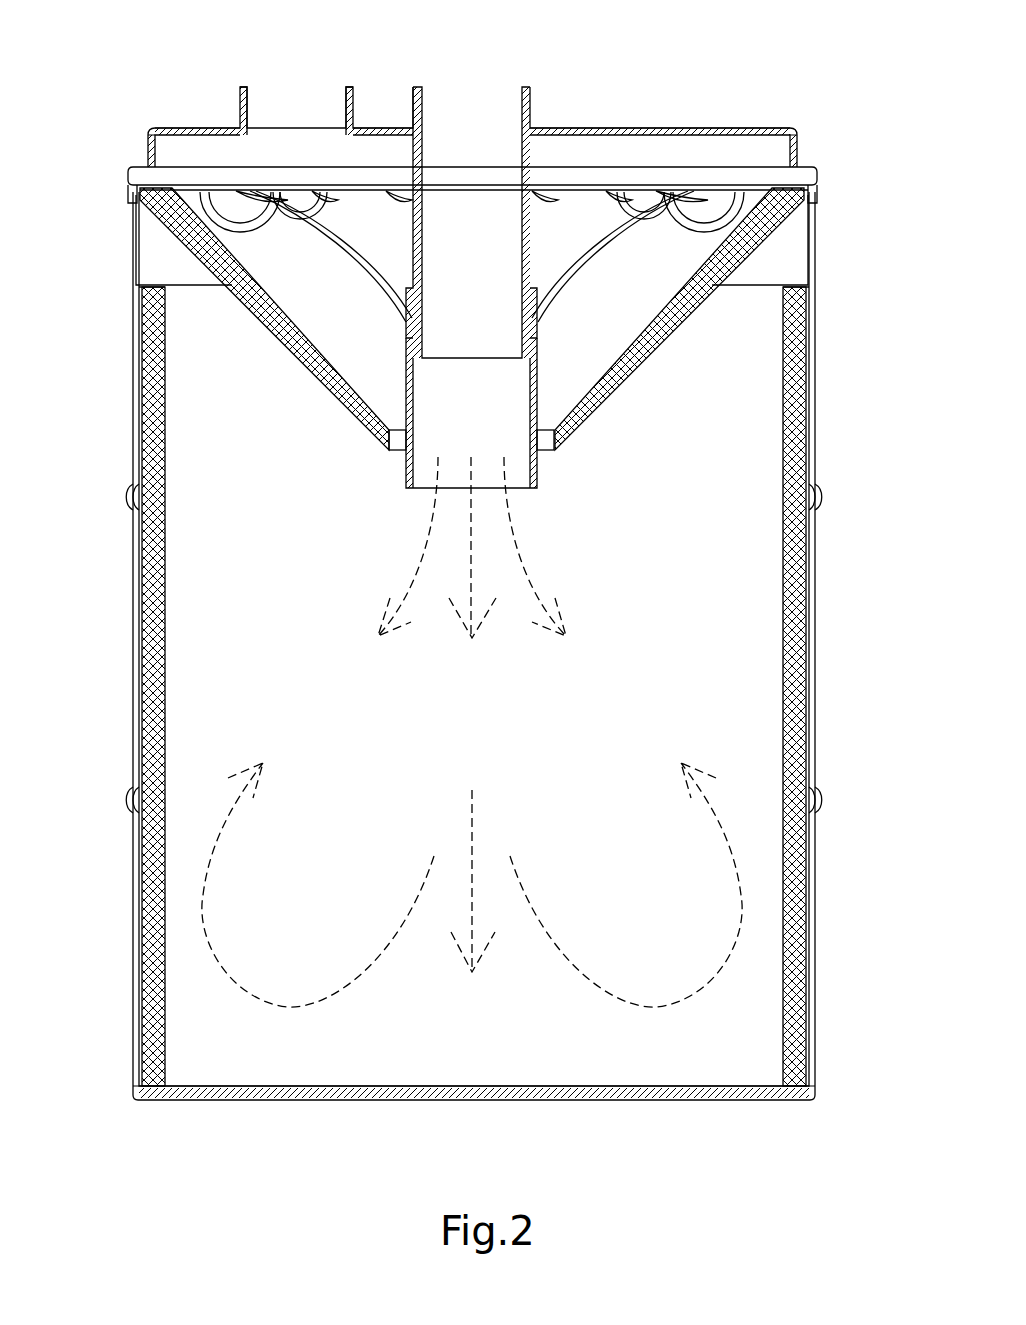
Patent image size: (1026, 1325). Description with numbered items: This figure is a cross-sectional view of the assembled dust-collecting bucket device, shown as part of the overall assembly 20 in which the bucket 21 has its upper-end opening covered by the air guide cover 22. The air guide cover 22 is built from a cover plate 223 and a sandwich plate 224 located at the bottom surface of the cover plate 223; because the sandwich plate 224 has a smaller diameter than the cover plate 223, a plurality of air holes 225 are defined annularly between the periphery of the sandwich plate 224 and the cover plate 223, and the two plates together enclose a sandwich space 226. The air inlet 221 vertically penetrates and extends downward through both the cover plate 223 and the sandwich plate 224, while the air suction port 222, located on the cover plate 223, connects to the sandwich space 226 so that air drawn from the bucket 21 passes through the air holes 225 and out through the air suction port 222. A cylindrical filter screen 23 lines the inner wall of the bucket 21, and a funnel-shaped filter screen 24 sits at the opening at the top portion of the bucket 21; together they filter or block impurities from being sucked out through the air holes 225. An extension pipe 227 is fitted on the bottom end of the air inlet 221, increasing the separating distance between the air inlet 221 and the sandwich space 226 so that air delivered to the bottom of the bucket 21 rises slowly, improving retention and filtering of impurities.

The container top flange 20 is at (815, 152).
The bucket 21 is at (812, 445).
The air guide cover 22 is at (472, 83).
The cylindrical filter screen 23 is at (158, 496).
The funnel-shaped filter screen 24 is at (310, 368).
The air inlet 221 is at (483, 112).
The air suction port 222 is at (300, 105).
The cover plate 223 is at (605, 126).
The sandwich plate 224 is at (582, 272).
The air holes 225 is at (213, 252).
The sandwich space 226 is at (404, 240).
The extension pipe 227 is at (406, 468).